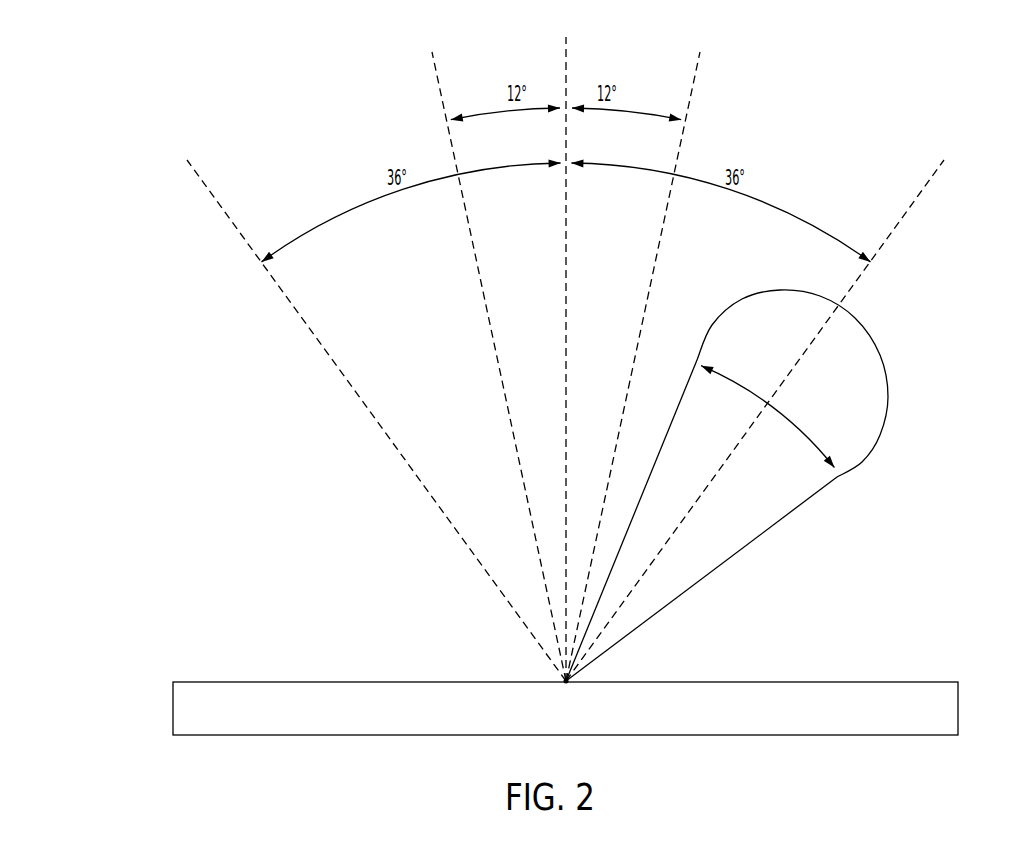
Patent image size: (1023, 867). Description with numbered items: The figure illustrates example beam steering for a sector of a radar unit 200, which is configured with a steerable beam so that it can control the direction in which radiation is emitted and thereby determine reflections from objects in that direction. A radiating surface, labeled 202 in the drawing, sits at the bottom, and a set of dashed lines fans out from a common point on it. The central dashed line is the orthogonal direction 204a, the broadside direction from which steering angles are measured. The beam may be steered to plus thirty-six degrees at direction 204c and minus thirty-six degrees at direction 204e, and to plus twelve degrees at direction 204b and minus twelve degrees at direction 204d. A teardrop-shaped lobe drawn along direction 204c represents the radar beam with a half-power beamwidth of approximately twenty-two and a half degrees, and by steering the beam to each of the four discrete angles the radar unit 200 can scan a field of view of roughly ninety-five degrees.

The radar unit 200 is at (136, 98).
The light source / emitter with beam lobe 202 is at (865, 328).
The orthogonal direction 204a is at (563, 58).
The +12 degree steering angle 204b is at (700, 78).
The +36 degree steering angle 204c is at (927, 193).
The -12 degree steering angle 204d is at (434, 92).
The -36 degree steering angle 204e is at (210, 193).